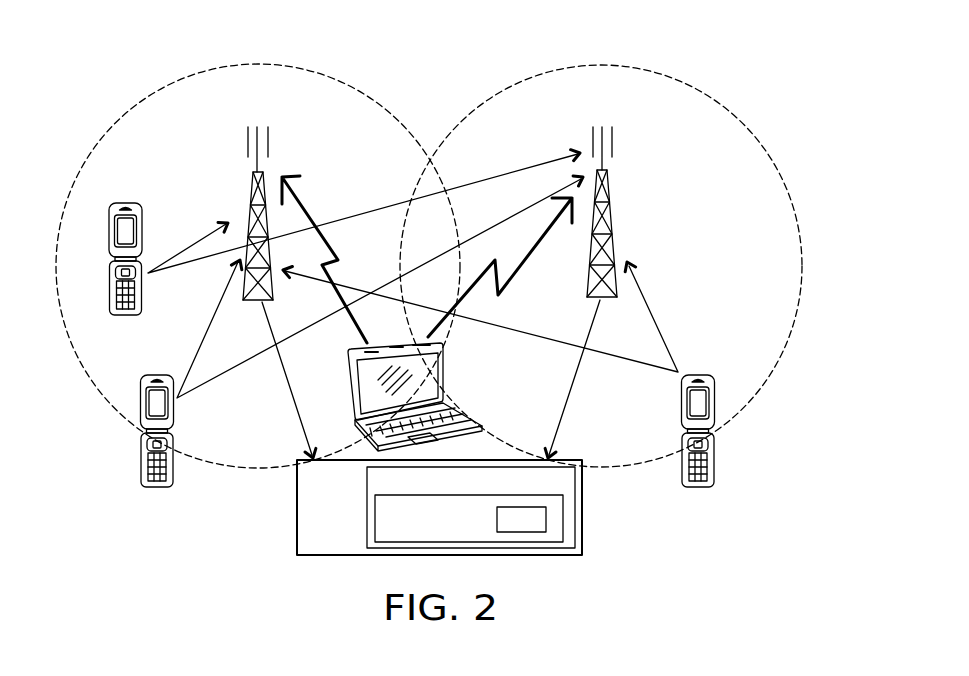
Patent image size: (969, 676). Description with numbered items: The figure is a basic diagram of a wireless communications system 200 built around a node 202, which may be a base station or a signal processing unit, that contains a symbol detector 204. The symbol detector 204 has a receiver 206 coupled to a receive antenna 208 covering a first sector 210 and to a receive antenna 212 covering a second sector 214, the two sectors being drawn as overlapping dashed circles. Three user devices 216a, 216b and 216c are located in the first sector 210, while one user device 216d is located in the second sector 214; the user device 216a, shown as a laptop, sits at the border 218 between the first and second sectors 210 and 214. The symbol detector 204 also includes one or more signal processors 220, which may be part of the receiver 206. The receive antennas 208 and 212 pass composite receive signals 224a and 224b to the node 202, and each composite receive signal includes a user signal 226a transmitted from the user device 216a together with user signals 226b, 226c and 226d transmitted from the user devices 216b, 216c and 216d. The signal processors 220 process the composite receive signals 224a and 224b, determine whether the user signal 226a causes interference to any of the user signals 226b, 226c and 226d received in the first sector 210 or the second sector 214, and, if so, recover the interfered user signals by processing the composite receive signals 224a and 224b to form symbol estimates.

The wireless communications system 200 is at (757, 63).
The node 202 is at (583, 518).
The symbol detector 204 is at (367, 515).
The receiver 206 is at (375, 530).
The receive antenna 208 is at (251, 196).
The first sector 210 is at (118, 123).
The receive antenna 212 is at (609, 196).
The second sector 214 is at (745, 120).
The user device 216a is at (443, 397).
The user device 216b is at (153, 487).
The user device 216c is at (125, 315).
The user device 216d is at (698, 487).
The border 218 is at (447, 297).
The signal processor 220 is at (521, 520).
The composite receive signal 224a is at (298, 415).
The composite receive signal 224b is at (565, 408).
The user signal 226a is at (333, 247).
The user signal 226b is at (219, 300).
The user signal 226c is at (183, 253).
The user signal 226d is at (530, 334).